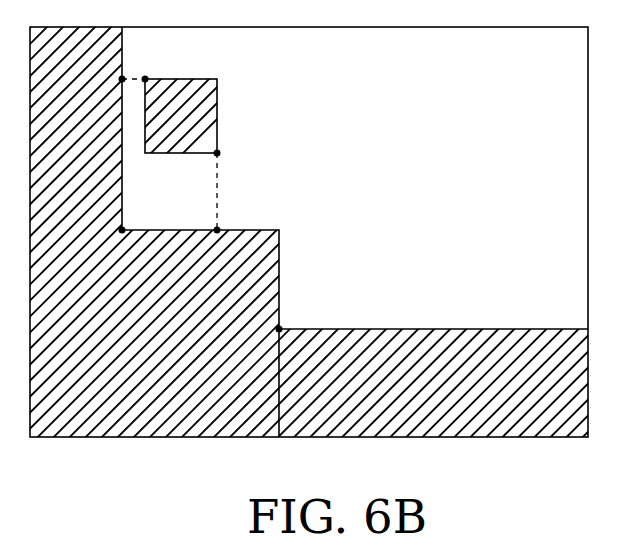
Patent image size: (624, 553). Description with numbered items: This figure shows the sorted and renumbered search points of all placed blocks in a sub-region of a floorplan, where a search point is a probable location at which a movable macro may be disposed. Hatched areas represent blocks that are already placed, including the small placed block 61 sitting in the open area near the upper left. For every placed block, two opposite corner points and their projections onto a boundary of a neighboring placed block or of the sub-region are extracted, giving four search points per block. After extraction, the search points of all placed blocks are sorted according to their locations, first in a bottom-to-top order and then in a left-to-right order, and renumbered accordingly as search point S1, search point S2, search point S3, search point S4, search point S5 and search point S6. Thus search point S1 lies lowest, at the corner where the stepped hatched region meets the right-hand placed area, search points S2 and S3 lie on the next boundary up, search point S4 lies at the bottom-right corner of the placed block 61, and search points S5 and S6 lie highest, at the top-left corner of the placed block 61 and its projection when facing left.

The placed block 61 is at (220, 119).
The search point S1 is at (290, 318).
The search point S2 is at (113, 218).
The search point S3 is at (208, 218).
The search point S4 is at (231, 157).
The search point S5 is at (111, 76).
The search point S6 is at (153, 66).